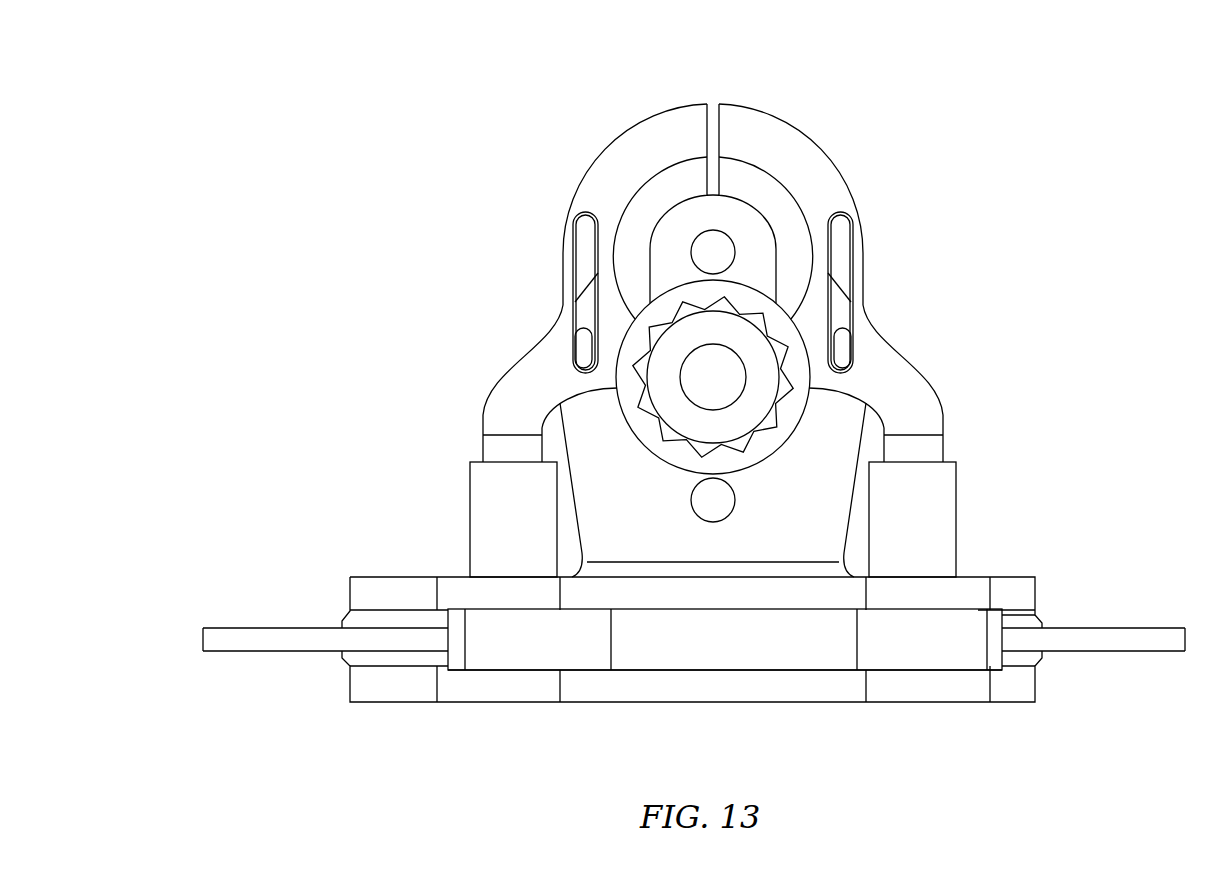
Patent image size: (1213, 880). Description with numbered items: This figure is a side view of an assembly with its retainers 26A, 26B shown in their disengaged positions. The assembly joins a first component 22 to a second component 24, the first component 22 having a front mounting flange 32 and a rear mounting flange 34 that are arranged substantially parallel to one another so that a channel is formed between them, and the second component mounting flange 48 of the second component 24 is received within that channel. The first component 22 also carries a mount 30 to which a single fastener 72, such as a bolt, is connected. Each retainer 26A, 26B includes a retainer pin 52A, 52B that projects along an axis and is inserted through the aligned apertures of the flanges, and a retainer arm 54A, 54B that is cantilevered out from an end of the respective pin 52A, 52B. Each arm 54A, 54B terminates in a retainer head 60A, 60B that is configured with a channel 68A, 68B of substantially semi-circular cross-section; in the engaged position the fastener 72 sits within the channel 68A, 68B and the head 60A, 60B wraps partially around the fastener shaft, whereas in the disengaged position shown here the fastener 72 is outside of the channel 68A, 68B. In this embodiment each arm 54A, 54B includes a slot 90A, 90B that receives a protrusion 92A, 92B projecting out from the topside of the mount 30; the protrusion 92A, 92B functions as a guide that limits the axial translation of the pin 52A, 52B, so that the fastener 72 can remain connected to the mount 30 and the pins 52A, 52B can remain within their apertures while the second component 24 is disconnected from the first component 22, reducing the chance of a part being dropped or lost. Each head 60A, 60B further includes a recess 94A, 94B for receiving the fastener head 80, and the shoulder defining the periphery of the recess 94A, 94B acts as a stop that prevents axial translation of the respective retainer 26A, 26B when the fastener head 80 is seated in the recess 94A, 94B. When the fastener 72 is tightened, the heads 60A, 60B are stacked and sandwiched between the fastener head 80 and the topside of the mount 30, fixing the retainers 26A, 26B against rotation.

The first component 22 is at (348, 683).
The second component 24 is at (602, 673).
The retainer 26A is at (945, 428).
The retainer 26B is at (483, 428).
The mount 30 is at (843, 435).
The front mounting flange 32 is at (453, 578).
The rear mounting flange 34 is at (452, 693).
The second component mounting flange 48 is at (995, 639).
The retainer pin 52A is at (957, 513).
The retainer pin 52B is at (470, 505).
The retainer arm 54A is at (812, 127).
The retainer arm 54B is at (603, 145).
The retainer head 60A is at (762, 108).
The retainer head 60B is at (656, 108).
The channel 68A is at (756, 245).
The channel 68B is at (670, 245).
The fastener 72 is at (657, 457).
The fastener head 80 is at (770, 458).
The slot 90A is at (843, 311).
The slot 90B is at (583, 311).
The protrusion 92A is at (839, 349).
The protrusion 92B is at (587, 349).
The recess 94A is at (772, 193).
The recess 94B is at (689, 176).